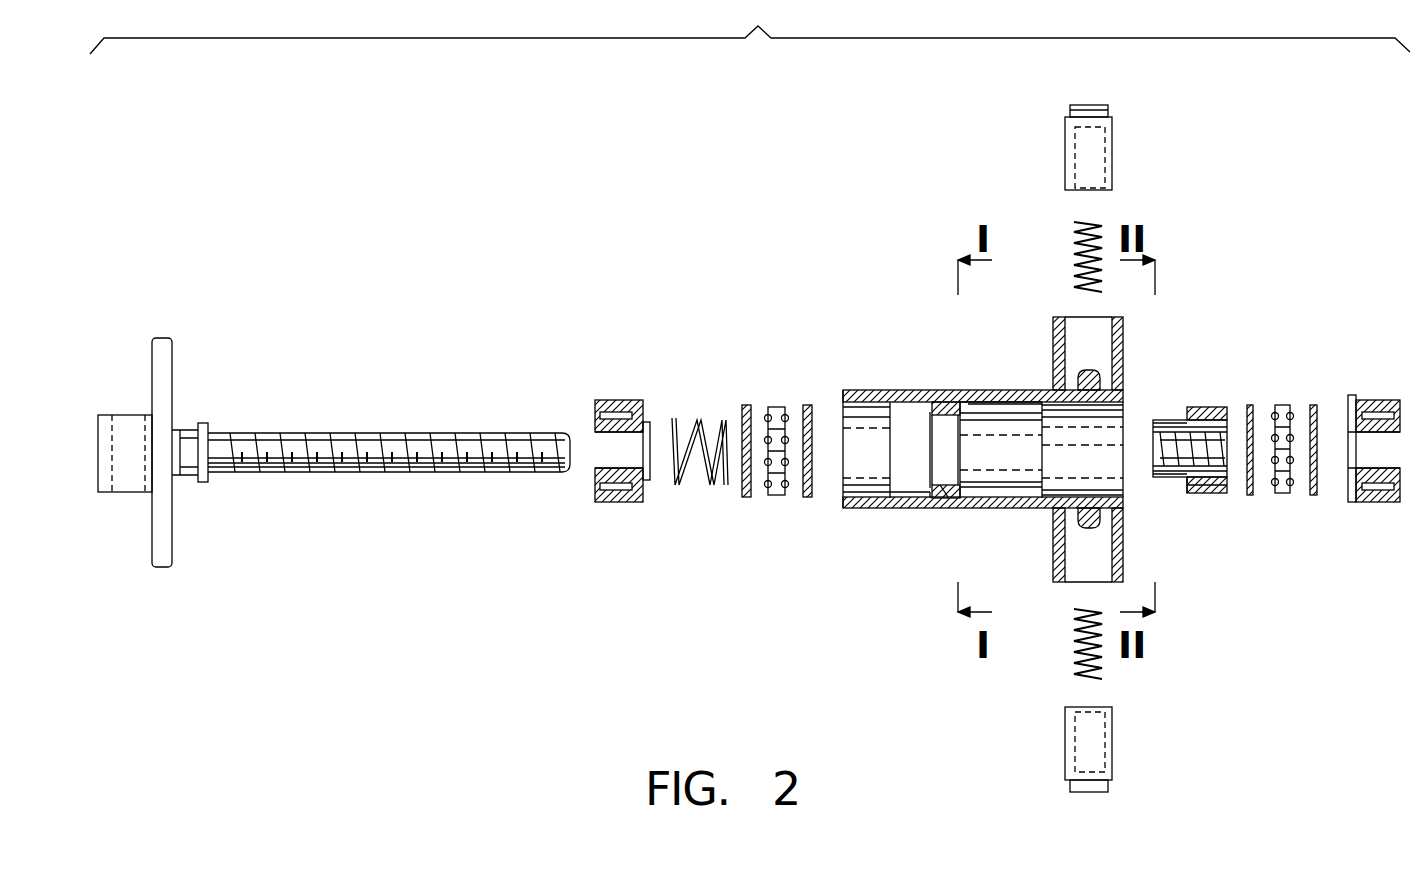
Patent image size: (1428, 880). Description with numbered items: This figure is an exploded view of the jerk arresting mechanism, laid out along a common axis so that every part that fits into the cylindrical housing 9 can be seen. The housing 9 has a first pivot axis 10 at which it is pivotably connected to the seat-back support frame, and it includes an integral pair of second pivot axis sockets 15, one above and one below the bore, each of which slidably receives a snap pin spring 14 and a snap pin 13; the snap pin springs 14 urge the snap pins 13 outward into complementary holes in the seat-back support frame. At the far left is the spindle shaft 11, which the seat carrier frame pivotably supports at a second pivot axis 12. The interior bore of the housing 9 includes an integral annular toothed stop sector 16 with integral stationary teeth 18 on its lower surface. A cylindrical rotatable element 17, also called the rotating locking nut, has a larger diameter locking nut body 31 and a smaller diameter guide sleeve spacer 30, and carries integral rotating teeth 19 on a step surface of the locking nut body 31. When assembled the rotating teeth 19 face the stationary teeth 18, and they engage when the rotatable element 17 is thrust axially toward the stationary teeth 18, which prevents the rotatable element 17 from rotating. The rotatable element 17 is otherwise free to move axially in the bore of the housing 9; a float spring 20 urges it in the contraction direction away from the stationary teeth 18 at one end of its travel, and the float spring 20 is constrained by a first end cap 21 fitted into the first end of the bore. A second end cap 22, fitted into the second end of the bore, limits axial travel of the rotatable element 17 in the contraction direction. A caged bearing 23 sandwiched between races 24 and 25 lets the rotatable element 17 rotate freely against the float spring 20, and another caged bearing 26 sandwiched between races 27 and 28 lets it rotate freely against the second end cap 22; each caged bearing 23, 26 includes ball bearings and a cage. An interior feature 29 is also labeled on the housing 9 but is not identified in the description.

The cylindrical housing 9 is at (950, 400).
The first pivot axis 10 is at (1090, 105).
The spindle shaft 11 is at (342, 470).
The second pivot axis 12 is at (160, 338).
The snap pin 13 is at (1105, 136).
The snap pin spring 14 is at (1076, 253).
The second pivot axis socket 15 is at (1105, 345).
The annular toothed stop sector 16 is at (950, 497).
The rotatable element 17 is at (1216, 493).
The stationary teeth 18 is at (975, 402).
The rotating teeth 19 is at (1183, 488).
The float spring 20 is at (685, 485).
The first end cap 21 is at (606, 500).
The second end cap 22 is at (1381, 503).
The caged bearing 23 is at (778, 407).
The race 24 is at (747, 405).
The race 25 is at (810, 407).
The caged bearing 26 is at (1281, 495).
The race 27 is at (1250, 497).
The race 28 is at (1316, 497).
The collar 29 is at (935, 432).
The guide sleeve spacer 30 is at (1167, 424).
The locking nut body 31 is at (1213, 408).